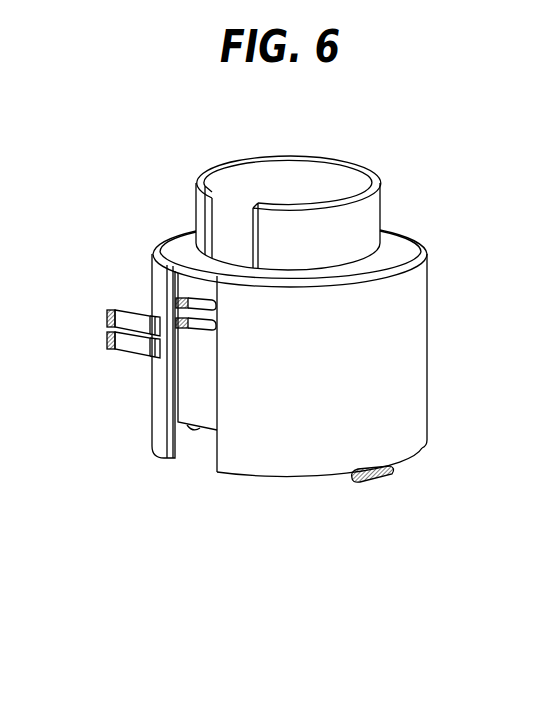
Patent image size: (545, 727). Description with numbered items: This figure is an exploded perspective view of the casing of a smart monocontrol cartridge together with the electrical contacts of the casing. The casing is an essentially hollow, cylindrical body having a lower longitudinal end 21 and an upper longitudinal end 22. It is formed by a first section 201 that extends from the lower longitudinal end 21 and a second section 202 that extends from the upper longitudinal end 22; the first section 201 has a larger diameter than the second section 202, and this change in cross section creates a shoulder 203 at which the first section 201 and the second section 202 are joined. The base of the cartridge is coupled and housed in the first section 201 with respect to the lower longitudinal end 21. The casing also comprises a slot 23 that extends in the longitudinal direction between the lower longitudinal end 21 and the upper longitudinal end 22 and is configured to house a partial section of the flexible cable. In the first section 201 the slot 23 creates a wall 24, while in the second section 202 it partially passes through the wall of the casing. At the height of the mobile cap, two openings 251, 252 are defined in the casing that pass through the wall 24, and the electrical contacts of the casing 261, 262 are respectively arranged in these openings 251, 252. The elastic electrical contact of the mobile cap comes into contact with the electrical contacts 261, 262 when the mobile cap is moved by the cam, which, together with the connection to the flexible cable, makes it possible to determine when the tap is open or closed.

The lower longitudinal end 21 is at (414, 461).
The upper longitudinal end 22 is at (365, 162).
The slot 23 is at (190, 458).
The wall 24 is at (198, 380).
The first section 201 is at (431, 352).
The second section 202 is at (391, 189).
The shoulder 203 is at (400, 247).
The opening 251 is at (178, 323).
The opening 252 is at (178, 298).
The electrical contact of the casing 261 is at (107, 342).
The electrical contact of the casing 262 is at (106, 318).